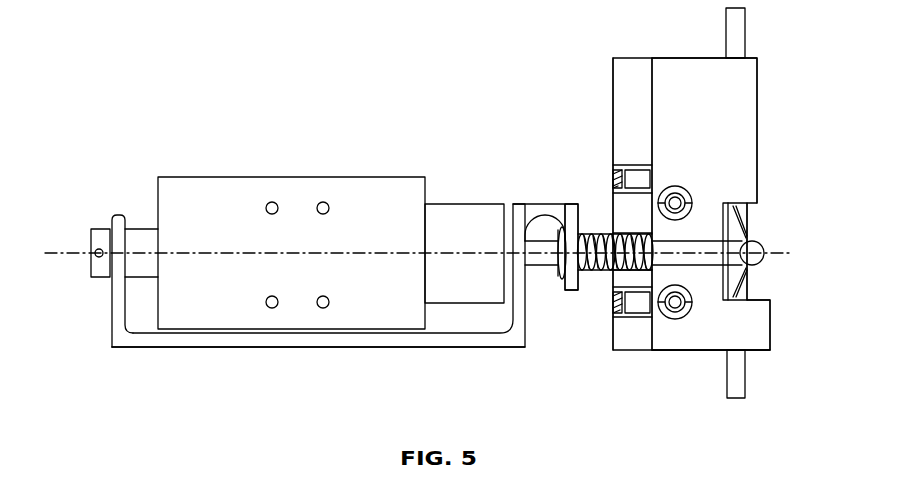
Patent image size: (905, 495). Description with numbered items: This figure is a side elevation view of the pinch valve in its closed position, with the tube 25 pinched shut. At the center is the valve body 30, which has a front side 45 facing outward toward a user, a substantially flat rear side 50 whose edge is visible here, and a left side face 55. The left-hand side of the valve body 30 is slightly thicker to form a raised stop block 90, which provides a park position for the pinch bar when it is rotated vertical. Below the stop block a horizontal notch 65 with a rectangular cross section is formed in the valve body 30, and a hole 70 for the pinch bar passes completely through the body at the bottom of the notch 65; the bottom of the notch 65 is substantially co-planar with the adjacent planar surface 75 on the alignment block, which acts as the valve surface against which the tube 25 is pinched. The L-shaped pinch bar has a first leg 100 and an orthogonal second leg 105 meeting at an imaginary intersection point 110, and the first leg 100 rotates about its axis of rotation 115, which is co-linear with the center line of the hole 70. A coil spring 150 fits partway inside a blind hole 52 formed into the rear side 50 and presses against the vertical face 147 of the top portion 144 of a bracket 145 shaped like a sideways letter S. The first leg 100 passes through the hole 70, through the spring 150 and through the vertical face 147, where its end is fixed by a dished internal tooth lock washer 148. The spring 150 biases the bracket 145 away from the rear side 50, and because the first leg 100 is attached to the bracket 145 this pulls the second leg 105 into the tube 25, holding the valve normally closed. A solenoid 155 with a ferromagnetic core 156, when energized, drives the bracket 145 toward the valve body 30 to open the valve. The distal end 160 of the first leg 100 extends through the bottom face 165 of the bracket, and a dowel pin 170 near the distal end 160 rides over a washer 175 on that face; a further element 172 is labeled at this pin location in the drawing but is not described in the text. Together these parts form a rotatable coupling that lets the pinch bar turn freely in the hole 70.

The tube 25 is at (738, 28).
The valve body 30 is at (630, 58).
The front side 45 is at (779, 327).
The rear side 50 is at (591, 108).
The blind hole 52 is at (633, 230).
The left side face 55 is at (757, 88).
The horizontal notch 65 is at (748, 228).
The hole 70 is at (715, 268).
The planar surface 75 is at (737, 273).
The raised stop block 90 is at (685, 58).
The first leg 100 is at (697, 240).
The second leg 105 is at (745, 233).
The intersection point 110 is at (747, 263).
The axis of rotation 115 is at (46, 252).
The top portion 144 is at (551, 204).
The bracket 145 is at (502, 348).
The vertical face 147 is at (574, 204).
The dished internal tooth lock washer 148 is at (558, 280).
The coil spring 150 is at (600, 272).
The solenoid 155 is at (227, 177).
The ferromagnetic core 156 is at (450, 203).
The distal end 160 is at (533, 238).
The bottom face 165 is at (272, 348).
The dowel pin 170 is at (105, 257).
The pin 172 is at (97, 257).
The washer 175 is at (110, 226).